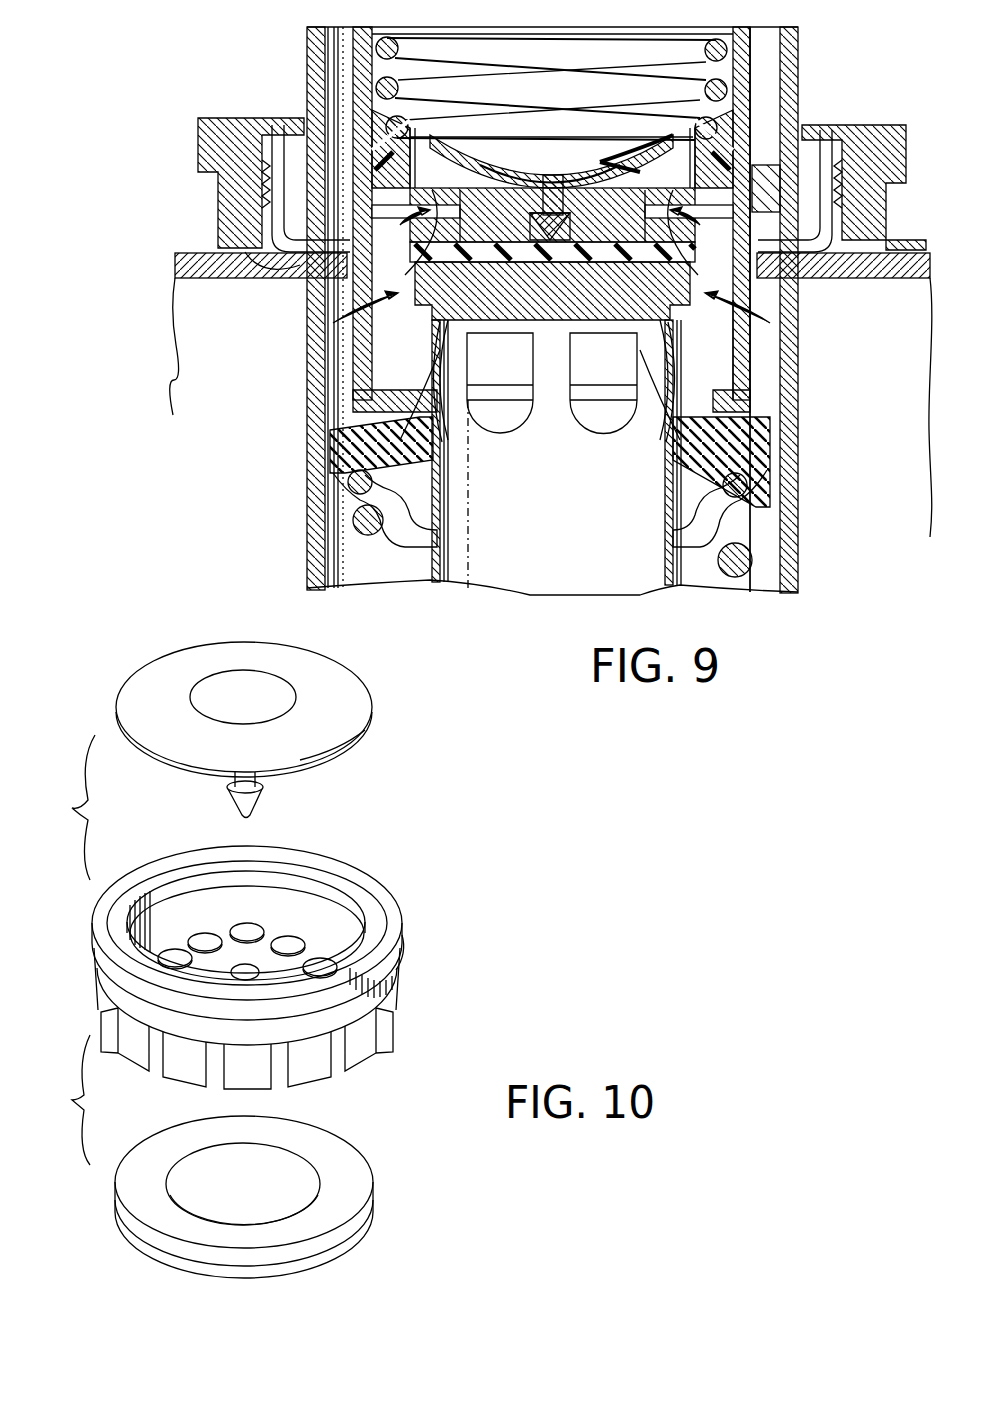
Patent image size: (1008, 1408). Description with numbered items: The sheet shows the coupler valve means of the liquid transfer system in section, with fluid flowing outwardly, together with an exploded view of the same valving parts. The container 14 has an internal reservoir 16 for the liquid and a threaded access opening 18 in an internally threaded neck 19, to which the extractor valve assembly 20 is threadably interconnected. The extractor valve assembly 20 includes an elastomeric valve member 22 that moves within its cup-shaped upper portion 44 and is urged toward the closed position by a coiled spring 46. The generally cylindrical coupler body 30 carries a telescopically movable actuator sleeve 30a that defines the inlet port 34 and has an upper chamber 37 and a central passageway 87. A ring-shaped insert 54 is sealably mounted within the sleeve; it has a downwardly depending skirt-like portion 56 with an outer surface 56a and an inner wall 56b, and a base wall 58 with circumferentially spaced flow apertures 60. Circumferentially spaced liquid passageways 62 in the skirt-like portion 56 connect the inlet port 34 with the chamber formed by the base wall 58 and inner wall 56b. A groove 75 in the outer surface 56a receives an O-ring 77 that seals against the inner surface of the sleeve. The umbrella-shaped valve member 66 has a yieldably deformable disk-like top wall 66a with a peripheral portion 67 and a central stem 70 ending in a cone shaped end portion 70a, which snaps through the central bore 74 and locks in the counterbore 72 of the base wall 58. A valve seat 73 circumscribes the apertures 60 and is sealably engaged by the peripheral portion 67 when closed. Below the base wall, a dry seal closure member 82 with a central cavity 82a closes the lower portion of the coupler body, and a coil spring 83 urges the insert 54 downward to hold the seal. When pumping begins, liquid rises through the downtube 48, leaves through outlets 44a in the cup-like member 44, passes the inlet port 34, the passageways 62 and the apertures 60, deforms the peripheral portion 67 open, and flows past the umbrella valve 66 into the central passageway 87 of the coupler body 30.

In FIG. 9, the container 14 is at (168, 262).
In FIG. 9, the internal reservoir 16 is at (891, 417).
In FIG. 9, the threaded access opening 18 is at (268, 263).
In FIG. 9, the internally threaded neck 19 is at (198, 135).
In FIG. 9, the extractor valve assembly 20 is at (808, 363).
In FIG. 9, the elastomeric valve member 22 is at (762, 460).
In FIG. 9, the coupler body 30 is at (815, 75).
In FIG. 9, the actuator sleeve 30a is at (745, 300).
In FIG. 9, the inlet port 34 is at (728, 330).
In FIG. 9, the upper chamber 37 is at (745, 109).
In FIG. 9, the cup-shaped upper portion 44 is at (800, 558).
In FIG. 9, the outlets 44a is at (598, 415).
In FIG. 9, the coiled spring 46 is at (733, 577).
In FIG. 9, the downtube 48 is at (442, 549).
In FIG. 9, the ring-shaped insert 54 is at (484, 198).
In FIG. 10, the ring-shaped insert 54 is at (260, 965).
In FIG. 10, the skirt-like portion 56 is at (383, 1020).
In FIG. 9, the outer surface 56a is at (378, 130).
In FIG. 10, the outer surface 56a is at (400, 944).
In FIG. 9, the inner wall 56b is at (445, 142).
In FIG. 10, the inner wall 56b is at (160, 910).
In FIG. 10, the base wall 58 is at (203, 958).
In FIG. 9, the flow apertures 60 is at (551, 256).
In FIG. 10, the flow apertures 60 is at (323, 958).
In FIG. 9, the liquid passageways 62 is at (290, 208).
In FIG. 10, the liquid passageways 62 is at (123, 1046).
In FIG. 9, the umbrella-shaped valve member 66 is at (551, 111).
In FIG. 10, the umbrella-shaped valve member 66 is at (281, 679).
In FIG. 9, the disk-like top wall 66a is at (548, 157).
In FIG. 10, the disk-like top wall 66a is at (336, 703).
In FIG. 9, the peripheral portion 67 is at (662, 135).
In FIG. 10, the peripheral portion 67 is at (358, 740).
In FIG. 9, the central stem 70 is at (541, 226).
In FIG. 10, the central stem 70 is at (244, 790).
In FIG. 9, the cone shaped end portion 70a is at (566, 262).
In FIG. 10, the cone shaped end portion 70a is at (262, 799).
In FIG. 9, the counterbore 72 is at (556, 262).
In FIG. 9, the valve seat 73 is at (640, 155).
In FIG. 10, the valve seat 73 is at (318, 913).
In FIG. 9, the central bore 74 is at (540, 206).
In FIG. 10, the central bore 74 is at (238, 963).
In FIG. 10, the circumferentially extending groove 75 is at (385, 990).
In FIG. 9, the O-ring 77 is at (765, 162).
In FIG. 9, the dry seal closure member 82 is at (508, 265).
In FIG. 10, the dry seal closure member 82 is at (373, 1196).
In FIG. 9, the central cavity 82a is at (636, 275).
In FIG. 9, the coil spring 83 is at (728, 49).
In FIG. 9, the central passageway 87 is at (345, 36).